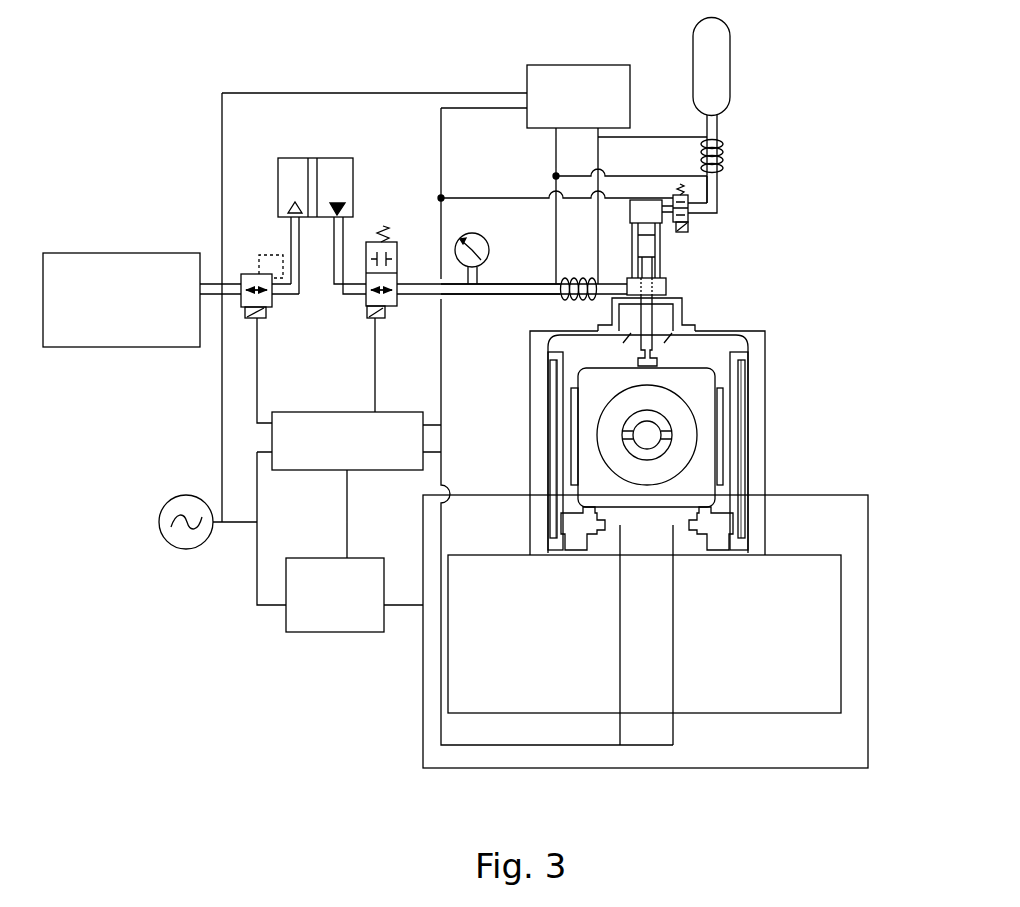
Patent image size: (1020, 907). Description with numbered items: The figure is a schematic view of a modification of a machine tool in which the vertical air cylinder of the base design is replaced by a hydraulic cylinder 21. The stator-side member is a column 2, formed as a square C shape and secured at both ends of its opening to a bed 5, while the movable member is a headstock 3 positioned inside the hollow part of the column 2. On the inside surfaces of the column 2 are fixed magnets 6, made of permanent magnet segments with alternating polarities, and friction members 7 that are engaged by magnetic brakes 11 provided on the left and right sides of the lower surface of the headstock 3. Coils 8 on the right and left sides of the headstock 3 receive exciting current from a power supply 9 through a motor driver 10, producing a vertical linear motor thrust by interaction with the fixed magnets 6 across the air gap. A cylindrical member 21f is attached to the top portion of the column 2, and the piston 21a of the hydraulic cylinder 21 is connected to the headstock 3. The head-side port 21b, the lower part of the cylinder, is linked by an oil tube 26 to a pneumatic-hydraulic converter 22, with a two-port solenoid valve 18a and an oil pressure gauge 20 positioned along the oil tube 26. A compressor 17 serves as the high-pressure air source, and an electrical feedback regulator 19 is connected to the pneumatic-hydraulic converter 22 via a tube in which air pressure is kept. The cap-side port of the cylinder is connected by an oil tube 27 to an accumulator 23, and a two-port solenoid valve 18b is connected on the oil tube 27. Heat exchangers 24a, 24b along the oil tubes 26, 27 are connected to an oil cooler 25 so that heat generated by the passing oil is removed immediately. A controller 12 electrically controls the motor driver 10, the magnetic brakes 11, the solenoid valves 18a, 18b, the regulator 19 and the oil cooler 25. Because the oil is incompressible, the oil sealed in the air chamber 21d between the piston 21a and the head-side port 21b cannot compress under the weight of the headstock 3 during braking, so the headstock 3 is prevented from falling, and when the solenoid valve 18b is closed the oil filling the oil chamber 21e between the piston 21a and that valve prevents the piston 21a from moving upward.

The column 2 is at (779, 342).
The headstock 3 is at (604, 378).
The bed 5 is at (744, 716).
The fixed magnets 6 is at (558, 385).
The friction members 7 is at (548, 434).
The coils 8 is at (575, 468).
The power supply 9 is at (180, 548).
The motor driver 10 is at (308, 632).
The magnetic brakes 11 is at (580, 523).
The controller 12 is at (340, 412).
The compressor 17 is at (143, 253).
The 2-port solenoid valve 18a is at (388, 308).
The 2-port solenoid valve 18b is at (690, 222).
The electrical feedback regulator 19 is at (272, 300).
The oil pressure gauge 20 is at (487, 234).
The hydraulic cylinder 21 is at (666, 283).
The piston 21a is at (652, 247).
The head-side port 21b is at (672, 290).
The air chamber 21d is at (660, 270).
The oil chamber 21e is at (640, 227).
The cylindrical member 21f is at (636, 263).
The pneumatic-hydraulic converter 22 is at (297, 158).
The accumulator 23 is at (733, 33).
The heat exchanger 24a is at (576, 300).
The heat exchanger 24b is at (722, 145).
The oil cooler 25 is at (593, 65).
The oil tube 26 is at (492, 297).
The oil tube 27 is at (716, 183).